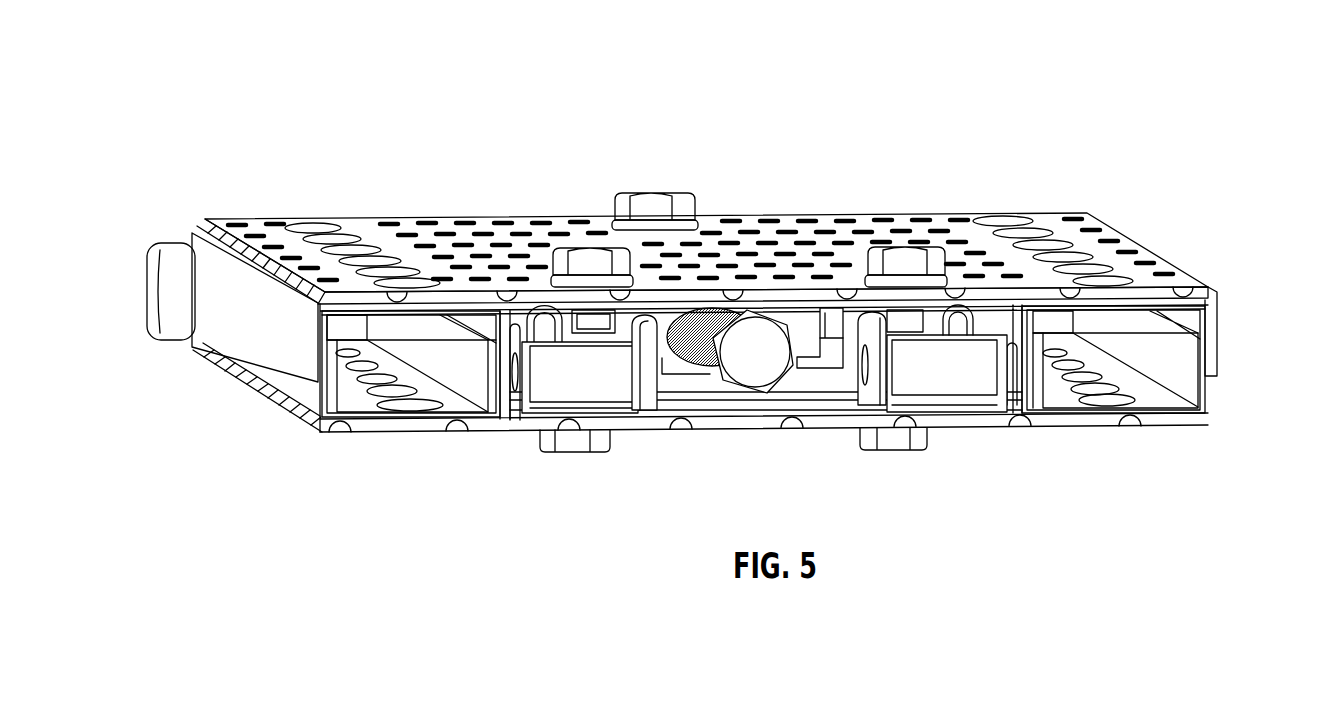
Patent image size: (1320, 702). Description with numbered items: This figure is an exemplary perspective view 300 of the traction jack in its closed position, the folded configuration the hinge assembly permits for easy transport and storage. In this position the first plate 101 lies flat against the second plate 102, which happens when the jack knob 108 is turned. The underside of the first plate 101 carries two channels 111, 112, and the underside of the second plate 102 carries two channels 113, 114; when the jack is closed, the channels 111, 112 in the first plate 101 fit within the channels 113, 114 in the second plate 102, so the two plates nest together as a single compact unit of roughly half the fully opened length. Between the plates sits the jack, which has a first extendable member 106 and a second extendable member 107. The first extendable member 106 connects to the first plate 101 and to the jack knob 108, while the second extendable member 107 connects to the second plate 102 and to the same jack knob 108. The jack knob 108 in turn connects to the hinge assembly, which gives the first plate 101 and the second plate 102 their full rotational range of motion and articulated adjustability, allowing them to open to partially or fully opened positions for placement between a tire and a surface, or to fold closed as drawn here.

The perspective view 300 is at (254, 84).
The first plate 101 is at (303, 250).
The second plate 102 is at (528, 430).
The first extendable member 106 is at (962, 323).
The second extendable member 107 is at (948, 375).
The jack knob 108 is at (753, 365).
The channel 111 is at (367, 312).
The channel 112 is at (1215, 303).
The channel 113 is at (390, 415).
The channel 114 is at (1168, 410).